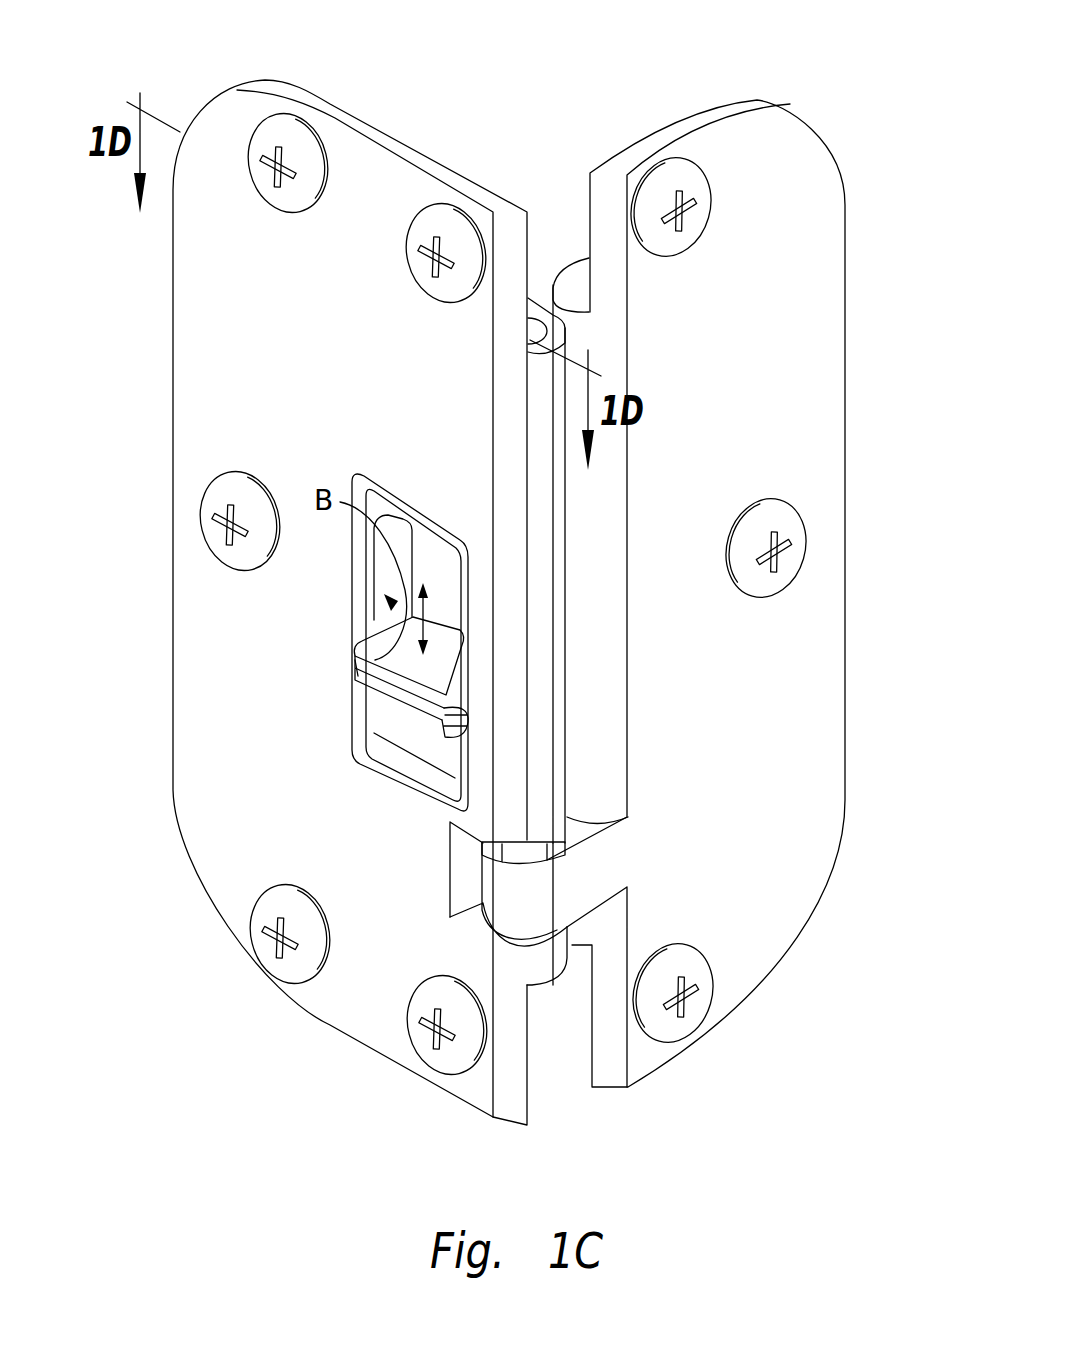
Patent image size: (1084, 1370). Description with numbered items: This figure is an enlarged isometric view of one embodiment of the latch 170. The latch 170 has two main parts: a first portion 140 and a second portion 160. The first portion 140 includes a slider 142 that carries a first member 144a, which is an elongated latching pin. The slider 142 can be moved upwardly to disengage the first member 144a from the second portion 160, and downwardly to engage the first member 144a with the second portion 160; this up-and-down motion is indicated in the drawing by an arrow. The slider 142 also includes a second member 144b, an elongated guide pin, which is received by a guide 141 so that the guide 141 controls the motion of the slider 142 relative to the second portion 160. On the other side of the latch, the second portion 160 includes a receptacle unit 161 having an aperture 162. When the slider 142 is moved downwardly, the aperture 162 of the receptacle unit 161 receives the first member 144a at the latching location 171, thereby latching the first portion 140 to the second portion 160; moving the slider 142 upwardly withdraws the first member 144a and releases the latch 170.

The first portion 140 is at (215, 345).
The guide 141 is at (320, 582).
The slider 142 is at (447, 633).
The first member 144a is at (547, 860).
The second member 144b is at (352, 658).
The second portion 160 is at (788, 392).
The receptacle unit 161 is at (571, 900).
The aperture 162 is at (492, 846).
The latch 170 is at (558, 178).
The latching location 171 is at (618, 874).